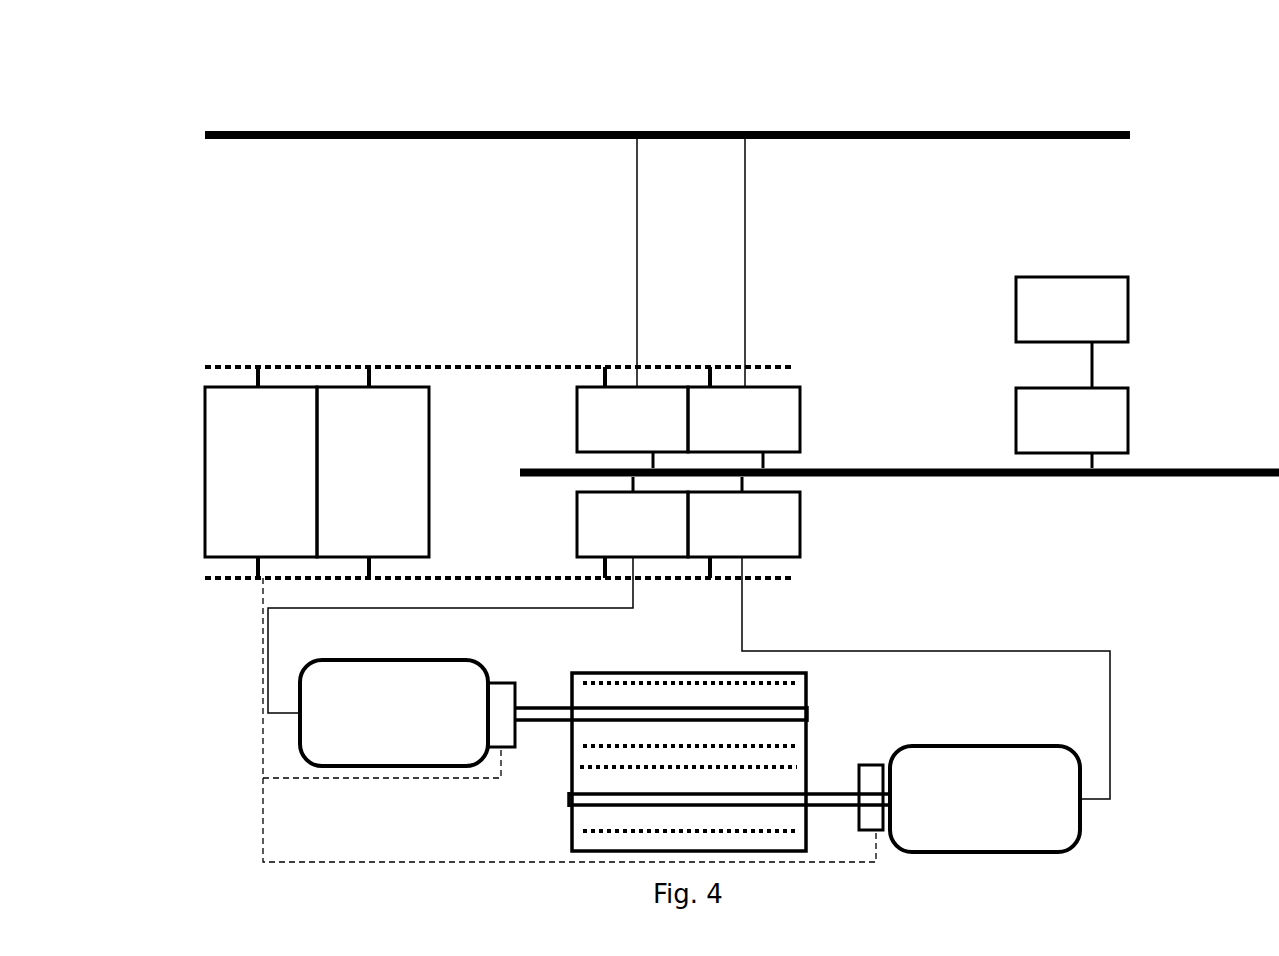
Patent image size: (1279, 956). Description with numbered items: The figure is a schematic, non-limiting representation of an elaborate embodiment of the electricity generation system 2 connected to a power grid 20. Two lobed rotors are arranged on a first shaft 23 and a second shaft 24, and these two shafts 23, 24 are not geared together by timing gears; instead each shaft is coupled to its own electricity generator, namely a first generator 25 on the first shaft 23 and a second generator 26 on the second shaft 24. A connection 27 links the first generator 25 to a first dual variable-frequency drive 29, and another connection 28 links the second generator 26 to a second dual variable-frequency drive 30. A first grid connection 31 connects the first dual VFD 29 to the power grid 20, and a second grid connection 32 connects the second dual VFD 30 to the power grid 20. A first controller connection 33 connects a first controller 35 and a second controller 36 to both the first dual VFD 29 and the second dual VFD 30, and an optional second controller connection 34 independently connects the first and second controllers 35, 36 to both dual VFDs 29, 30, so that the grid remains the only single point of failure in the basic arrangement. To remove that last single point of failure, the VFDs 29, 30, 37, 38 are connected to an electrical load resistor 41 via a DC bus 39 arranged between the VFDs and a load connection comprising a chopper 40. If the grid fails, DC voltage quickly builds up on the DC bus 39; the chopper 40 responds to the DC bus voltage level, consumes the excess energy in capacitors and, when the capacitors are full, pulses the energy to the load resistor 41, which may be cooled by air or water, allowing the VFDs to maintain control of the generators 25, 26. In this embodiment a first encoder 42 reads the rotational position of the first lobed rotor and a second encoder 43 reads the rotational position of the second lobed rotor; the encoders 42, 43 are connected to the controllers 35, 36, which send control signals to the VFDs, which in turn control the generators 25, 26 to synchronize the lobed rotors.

The electricity generation system 2 is at (200, 126).
The power grid 20 is at (400, 113).
The first shaft 23 is at (535, 695).
The second shaft 24 is at (825, 788).
The first generator 25 is at (383, 768).
The second generator 26 is at (1088, 830).
The connection 27 is at (270, 682).
The connection 28 is at (1025, 658).
The first dual variable-frequency drive 29 is at (575, 505).
The second dual variable-frequency drive 30 is at (805, 515).
The first grid connection 31 is at (630, 240).
The second grid connection 32 is at (755, 240).
The first controller connection 33 is at (245, 588).
The second controller connection 34 is at (245, 357).
The first controller 35 is at (200, 462).
The second controller 36 is at (430, 462).
The VFD 37 is at (575, 408).
The VFD 38 is at (808, 410).
The DC bus 39 is at (975, 482).
The chopper 40 is at (1147, 411).
The electrical load resistor 41 is at (1140, 301).
The first encoder 42 is at (515, 752).
The second encoder 43 is at (850, 828).